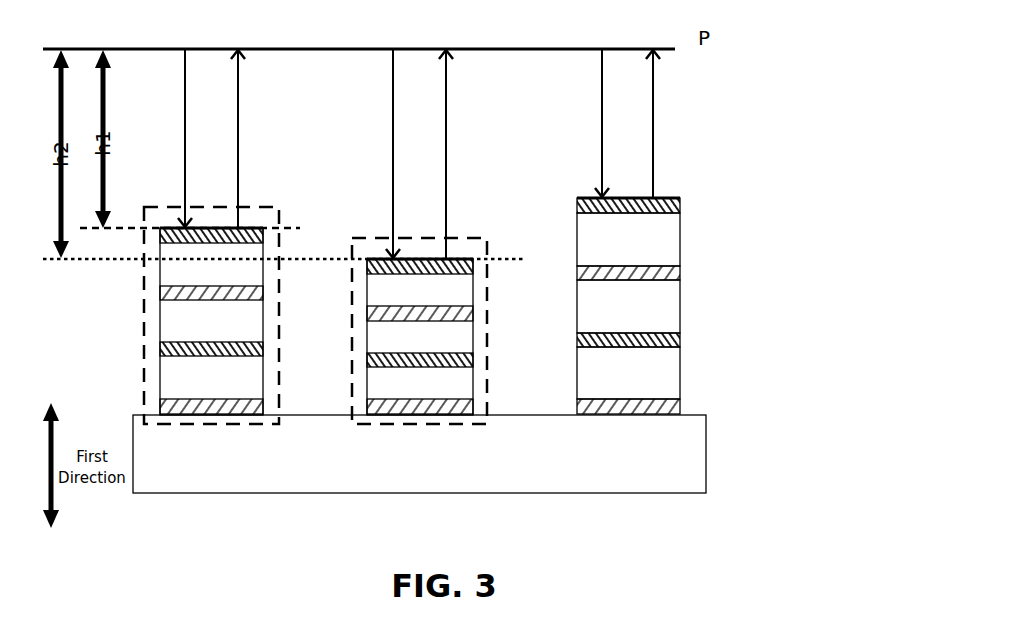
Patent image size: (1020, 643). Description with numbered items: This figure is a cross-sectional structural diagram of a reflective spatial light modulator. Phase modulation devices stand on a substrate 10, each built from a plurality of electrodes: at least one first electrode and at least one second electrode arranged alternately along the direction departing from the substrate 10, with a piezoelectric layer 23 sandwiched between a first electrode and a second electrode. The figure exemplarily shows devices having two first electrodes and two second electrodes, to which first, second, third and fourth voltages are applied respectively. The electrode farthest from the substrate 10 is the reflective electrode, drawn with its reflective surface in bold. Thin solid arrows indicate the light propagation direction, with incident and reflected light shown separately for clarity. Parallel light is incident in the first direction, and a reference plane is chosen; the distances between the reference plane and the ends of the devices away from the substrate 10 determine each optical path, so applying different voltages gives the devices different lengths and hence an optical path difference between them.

The substrate 10 is at (565, 466).
The piezoelectric layer 23 is at (633, 388).